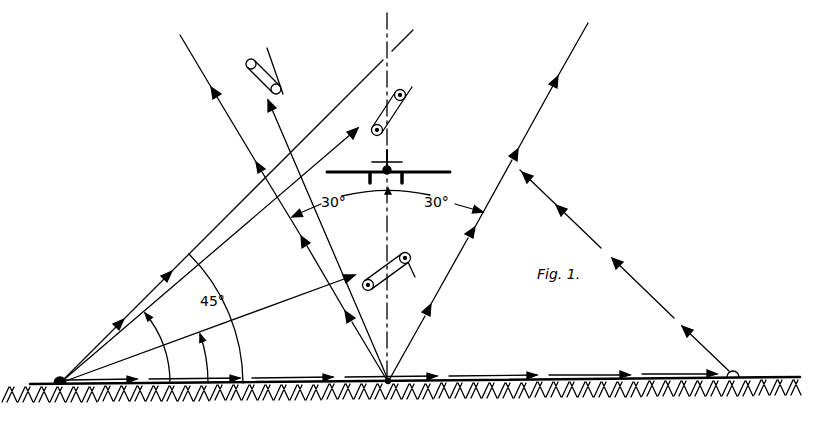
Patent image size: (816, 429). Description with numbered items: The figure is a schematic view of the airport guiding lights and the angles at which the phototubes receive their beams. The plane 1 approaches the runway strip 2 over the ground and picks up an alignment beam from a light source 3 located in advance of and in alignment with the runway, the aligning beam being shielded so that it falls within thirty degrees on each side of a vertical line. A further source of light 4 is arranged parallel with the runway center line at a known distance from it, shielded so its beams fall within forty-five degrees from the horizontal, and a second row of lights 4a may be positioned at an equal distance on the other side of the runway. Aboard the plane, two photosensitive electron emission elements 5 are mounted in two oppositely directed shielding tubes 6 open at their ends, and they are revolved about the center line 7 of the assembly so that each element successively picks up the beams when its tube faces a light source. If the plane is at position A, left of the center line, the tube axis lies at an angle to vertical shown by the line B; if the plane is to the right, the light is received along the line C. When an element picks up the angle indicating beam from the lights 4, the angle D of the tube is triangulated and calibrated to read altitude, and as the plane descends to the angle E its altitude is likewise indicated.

The plane 1 is at (420, 170).
The runway strip 2 is at (343, 386).
The light source 3 is at (386, 380).
The source of light 4 is at (55, 381).
The second row of lights 4a is at (737, 374).
The photosensitive electron emission element 5 is at (407, 84).
The shielding tube 6 is at (374, 116).
The center line of the assembly 7 is at (406, 100).
The position A is at (274, 60).
The line B is at (279, 127).
The line C is at (541, 110).
The angle D is at (209, 255).
The angle E is at (207, 329).